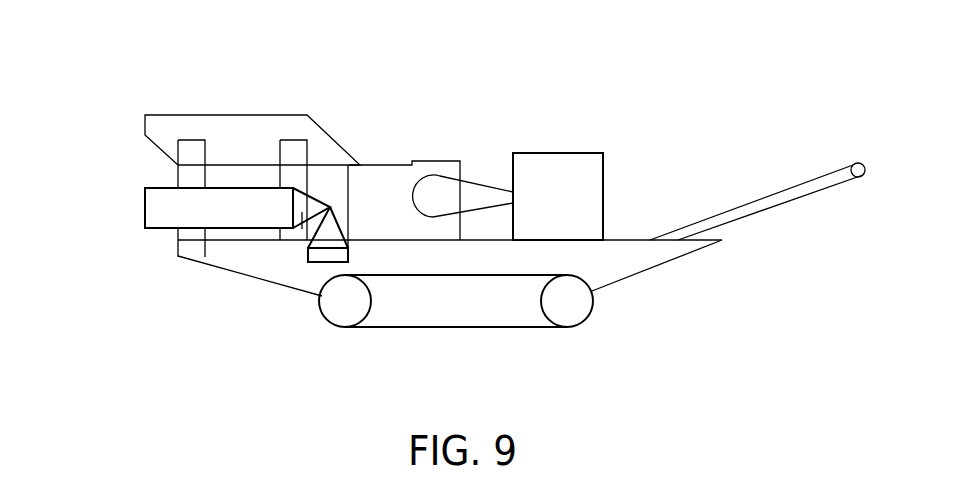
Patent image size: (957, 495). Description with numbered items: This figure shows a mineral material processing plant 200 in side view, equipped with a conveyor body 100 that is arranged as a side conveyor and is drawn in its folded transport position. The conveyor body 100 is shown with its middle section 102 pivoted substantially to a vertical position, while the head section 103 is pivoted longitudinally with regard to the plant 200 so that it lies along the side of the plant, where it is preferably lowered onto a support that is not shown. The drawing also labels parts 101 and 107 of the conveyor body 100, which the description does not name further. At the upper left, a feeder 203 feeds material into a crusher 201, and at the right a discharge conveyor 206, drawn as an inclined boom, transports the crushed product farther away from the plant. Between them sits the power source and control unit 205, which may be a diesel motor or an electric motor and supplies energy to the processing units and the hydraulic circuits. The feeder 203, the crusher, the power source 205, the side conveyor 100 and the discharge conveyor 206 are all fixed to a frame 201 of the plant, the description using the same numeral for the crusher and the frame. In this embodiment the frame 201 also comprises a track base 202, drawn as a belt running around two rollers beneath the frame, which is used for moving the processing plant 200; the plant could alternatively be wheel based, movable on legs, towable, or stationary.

The conveyor body 100 is at (137, 185).
The mounting base 101 is at (318, 259).
The middle section 102 is at (353, 240).
The head section 103 is at (158, 223).
The cutting head 107 is at (300, 236).
The mineral material processing plant 200 is at (645, 38).
The frame 201 is at (390, 177).
The track base 202 is at (348, 327).
The feeder 203 is at (228, 127).
The power source and control unit 205 is at (540, 168).
The discharge conveyor 206 is at (760, 208).